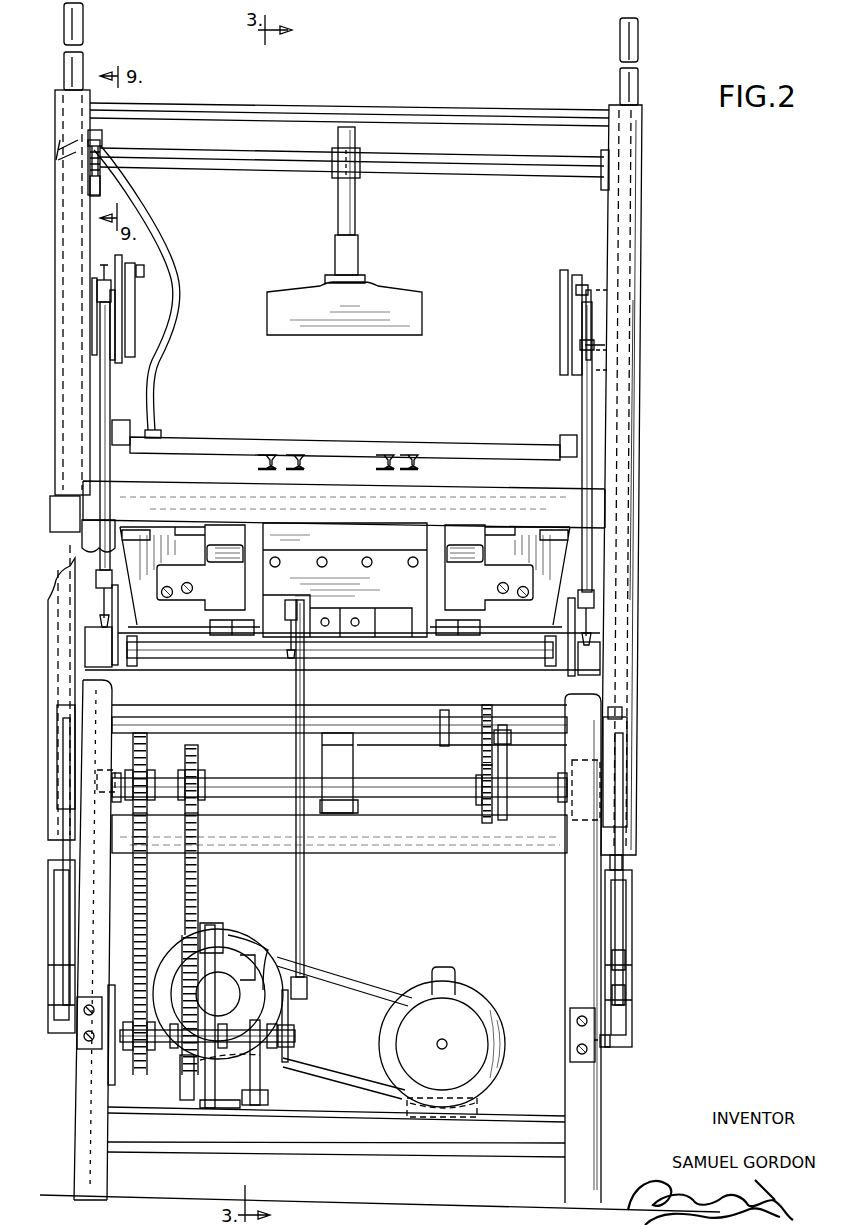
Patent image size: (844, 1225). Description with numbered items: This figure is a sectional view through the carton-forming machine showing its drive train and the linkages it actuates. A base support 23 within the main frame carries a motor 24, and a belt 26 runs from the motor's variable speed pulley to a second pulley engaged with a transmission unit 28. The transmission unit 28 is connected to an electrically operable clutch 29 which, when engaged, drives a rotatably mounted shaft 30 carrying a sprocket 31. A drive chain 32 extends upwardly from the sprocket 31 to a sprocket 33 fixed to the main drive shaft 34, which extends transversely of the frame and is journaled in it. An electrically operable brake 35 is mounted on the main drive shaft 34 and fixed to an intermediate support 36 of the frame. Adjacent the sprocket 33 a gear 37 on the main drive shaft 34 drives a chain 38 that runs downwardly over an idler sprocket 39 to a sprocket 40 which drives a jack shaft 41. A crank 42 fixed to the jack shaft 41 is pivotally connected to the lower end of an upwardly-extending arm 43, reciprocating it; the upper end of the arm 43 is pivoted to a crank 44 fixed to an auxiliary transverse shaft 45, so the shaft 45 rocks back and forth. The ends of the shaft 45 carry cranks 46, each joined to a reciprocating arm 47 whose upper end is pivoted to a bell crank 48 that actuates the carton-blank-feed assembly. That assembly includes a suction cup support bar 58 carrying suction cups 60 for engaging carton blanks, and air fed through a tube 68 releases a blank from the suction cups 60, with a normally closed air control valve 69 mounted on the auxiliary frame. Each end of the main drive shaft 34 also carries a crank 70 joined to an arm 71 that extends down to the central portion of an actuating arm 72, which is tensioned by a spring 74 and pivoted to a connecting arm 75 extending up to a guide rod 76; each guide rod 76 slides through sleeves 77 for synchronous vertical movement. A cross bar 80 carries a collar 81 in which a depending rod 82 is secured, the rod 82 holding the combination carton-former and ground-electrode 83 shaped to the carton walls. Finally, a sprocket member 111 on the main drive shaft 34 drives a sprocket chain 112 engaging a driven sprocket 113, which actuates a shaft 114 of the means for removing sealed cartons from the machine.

The base support 23 is at (502, 1113).
The motor 24 is at (501, 1039).
The belt 26 is at (341, 966).
The transmission unit 28 is at (241, 935).
The electrically operable clutch 29 is at (105, 1080).
The rotatably mounted shaft 30 is at (148, 1045).
The sprocket 31 is at (139, 1080).
The drive chain 32 is at (143, 891).
The sprocket 33 is at (141, 763).
The main drive shaft 34 is at (235, 781).
The electrically operable brake 35 is at (358, 770).
The intermediate support 36 is at (440, 830).
The gear 37 is at (194, 763).
The chain 38 is at (196, 881).
The idler sprocket 39 is at (185, 933).
The sprocket 40 is at (195, 1097).
The jack shaft 41 is at (250, 1055).
The crank 42 is at (300, 1023).
The upwardly-extending arm 43 is at (307, 884).
The crank 44 is at (285, 607).
The auxiliary transverse shaft 45 is at (480, 657).
The cranks 46 is at (108, 619).
The reciprocating arm 47 is at (97, 403).
The bell crank 48 is at (107, 275).
The suction cup support bar 58 is at (466, 444).
The suction cups 60 is at (415, 464).
The tube 68 is at (167, 301).
The air control valve 69 is at (100, 143).
The crank 70 is at (57, 745).
The arm 71 is at (60, 800).
The actuating arm 72 is at (48, 946).
The tensioning spring 74 is at (48, 984).
The connecting arm 75 is at (58, 633).
The guide rod 76 is at (639, 95).
The sleeves 77 is at (49, 521).
The cross bar 80 is at (448, 160).
The collar 81 is at (361, 156).
The depending rod 82 is at (357, 210).
The combination carton-former and ground-electrode 83 is at (393, 292).
The sprocket member 111 is at (480, 790).
The sprocket chain 112 is at (507, 766).
The sprocket 113 is at (489, 720).
The shaft 114 is at (388, 722).